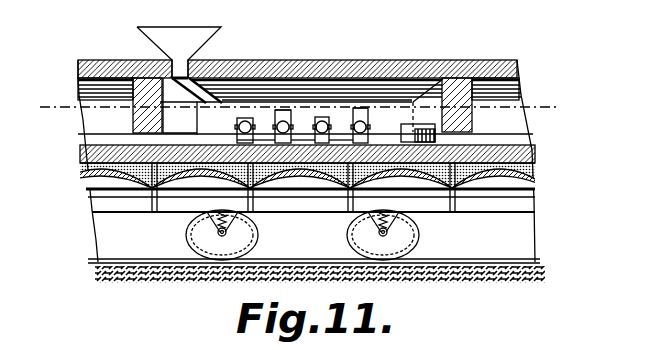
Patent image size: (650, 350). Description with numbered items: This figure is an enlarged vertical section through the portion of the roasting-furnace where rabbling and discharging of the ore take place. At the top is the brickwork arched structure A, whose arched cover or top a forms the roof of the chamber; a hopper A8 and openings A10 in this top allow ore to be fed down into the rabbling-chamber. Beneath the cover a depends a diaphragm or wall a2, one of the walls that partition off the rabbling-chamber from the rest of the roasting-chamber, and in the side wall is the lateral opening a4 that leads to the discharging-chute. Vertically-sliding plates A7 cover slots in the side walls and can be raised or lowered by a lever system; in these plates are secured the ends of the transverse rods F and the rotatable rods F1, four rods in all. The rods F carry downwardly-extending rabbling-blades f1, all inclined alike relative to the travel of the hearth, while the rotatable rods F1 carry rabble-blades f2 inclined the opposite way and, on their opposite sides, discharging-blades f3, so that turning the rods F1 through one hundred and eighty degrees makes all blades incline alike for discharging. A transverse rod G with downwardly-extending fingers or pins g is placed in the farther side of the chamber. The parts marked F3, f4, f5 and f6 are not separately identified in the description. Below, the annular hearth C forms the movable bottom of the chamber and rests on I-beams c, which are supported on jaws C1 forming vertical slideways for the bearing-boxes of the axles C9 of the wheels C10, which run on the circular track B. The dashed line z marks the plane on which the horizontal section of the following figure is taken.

The arched cover or top a is at (300, 63).
The hopper A8 is at (179, 52).
The openings A10 is at (170, 63).
The brickwork arched structure A is at (520, 85).
The lateral opening a4 is at (286, 106).
The vertically-sliding plates A7 is at (180, 130).
The diaphragm or wall a2 is at (428, 105).
The section line z is at (294, 107).
The rotatable rods F1 is at (243, 123).
The rods F is at (325, 124).
The carrier F3 is at (317, 123).
The rabbling-blades f1 is at (236, 136).
The rabble-blades f2 is at (264, 135).
The discharging-blades f3 is at (279, 110).
The carrier base f4 is at (305, 135).
The carrier top f5 is at (360, 108).
The carrier base f6 is at (341, 135).
The transverse rod G is at (401, 134).
The fingers or pins g is at (437, 143).
The annular hearth C is at (85, 152).
The I-beams c is at (310, 200).
The jaws C1 is at (206, 222).
The axles C9 is at (400, 235).
The wheels C10 is at (253, 236).
The circular track B is at (155, 258).